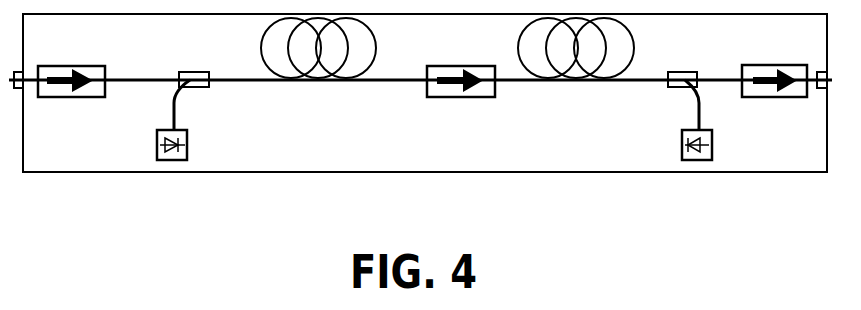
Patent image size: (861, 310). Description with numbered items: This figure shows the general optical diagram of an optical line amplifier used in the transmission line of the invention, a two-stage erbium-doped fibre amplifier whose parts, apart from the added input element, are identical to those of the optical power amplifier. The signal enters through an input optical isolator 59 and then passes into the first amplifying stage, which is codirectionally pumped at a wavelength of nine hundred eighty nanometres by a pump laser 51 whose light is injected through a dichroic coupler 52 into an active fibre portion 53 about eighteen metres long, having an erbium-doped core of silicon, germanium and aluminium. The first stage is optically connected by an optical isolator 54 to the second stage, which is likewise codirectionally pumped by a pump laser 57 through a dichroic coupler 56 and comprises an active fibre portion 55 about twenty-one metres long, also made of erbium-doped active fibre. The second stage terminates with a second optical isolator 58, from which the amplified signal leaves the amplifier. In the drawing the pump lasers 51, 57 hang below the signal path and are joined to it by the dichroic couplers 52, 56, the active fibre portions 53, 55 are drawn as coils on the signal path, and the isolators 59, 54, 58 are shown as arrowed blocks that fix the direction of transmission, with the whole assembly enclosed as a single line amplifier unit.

The pump laser 51 is at (187, 153).
The dichroic coupler 52 is at (192, 72).
The active fibre portion 53 is at (333, 80).
The optical isolator 54 is at (450, 97).
The active fibre portion 55 is at (591, 80).
The dichroic coupler 56 is at (685, 72).
The pump laser 57 is at (682, 145).
The second optical isolator 58 is at (758, 97).
The input optical isolator 59 is at (93, 97).